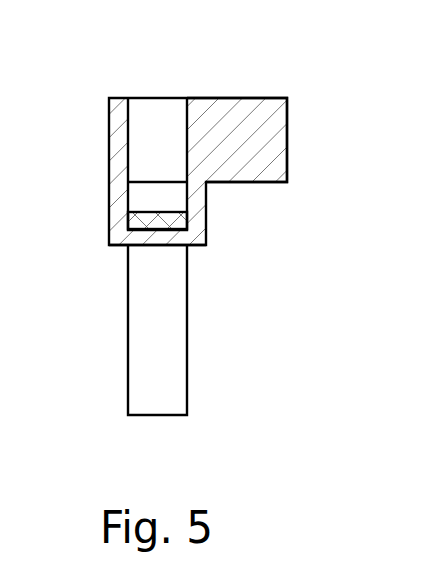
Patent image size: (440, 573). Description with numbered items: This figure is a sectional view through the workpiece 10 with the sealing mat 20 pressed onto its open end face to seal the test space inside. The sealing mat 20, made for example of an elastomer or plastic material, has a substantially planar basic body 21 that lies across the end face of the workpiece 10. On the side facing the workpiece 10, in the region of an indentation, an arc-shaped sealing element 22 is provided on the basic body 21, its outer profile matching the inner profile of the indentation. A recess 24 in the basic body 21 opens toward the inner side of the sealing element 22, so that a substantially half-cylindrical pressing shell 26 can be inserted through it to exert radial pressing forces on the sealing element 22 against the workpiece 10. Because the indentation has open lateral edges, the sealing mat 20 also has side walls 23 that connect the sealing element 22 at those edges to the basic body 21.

The workpiece 10 is at (188, 348).
The sealing mat 20 is at (220, 174).
The basic body 21 is at (250, 125).
The sealing element 22 is at (148, 232).
The side walls 23 is at (118, 200).
The recess 24 is at (168, 123).
The pressing shell 26 is at (178, 221).